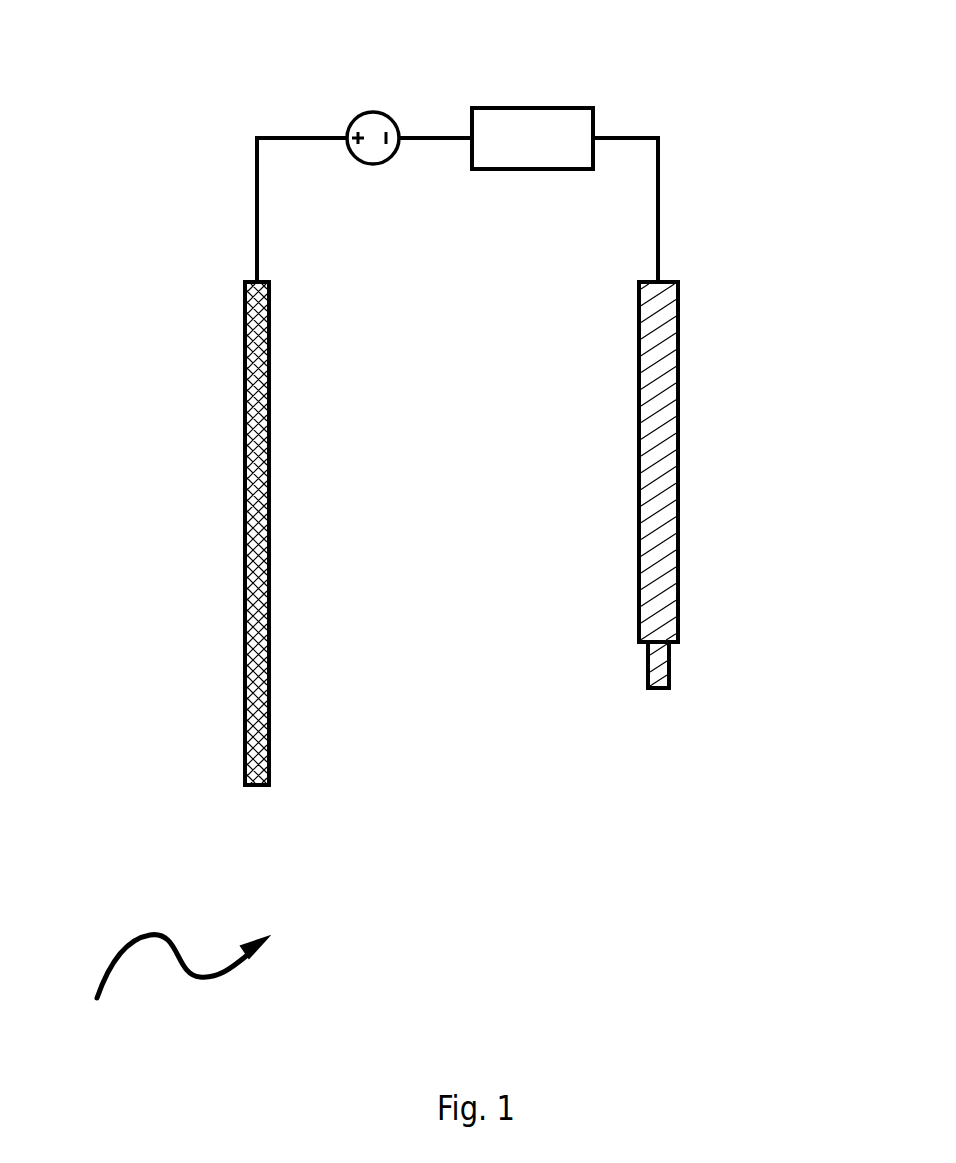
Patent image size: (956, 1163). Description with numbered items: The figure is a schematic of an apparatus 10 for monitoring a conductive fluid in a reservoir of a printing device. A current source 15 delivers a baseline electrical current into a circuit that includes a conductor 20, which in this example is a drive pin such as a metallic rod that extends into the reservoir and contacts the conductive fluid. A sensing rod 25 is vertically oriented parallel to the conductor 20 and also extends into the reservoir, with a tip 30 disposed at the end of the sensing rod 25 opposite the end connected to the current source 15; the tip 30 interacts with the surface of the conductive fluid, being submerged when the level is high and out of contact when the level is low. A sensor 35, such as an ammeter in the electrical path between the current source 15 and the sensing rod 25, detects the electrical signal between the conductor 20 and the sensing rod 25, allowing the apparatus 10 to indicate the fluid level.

The apparatus 10 is at (169, 988).
The current source 15 is at (371, 113).
The conductor 20 is at (245, 470).
The sensing rod 25 is at (678, 432).
The tip 30 is at (672, 680).
The sensor 35 is at (548, 152).